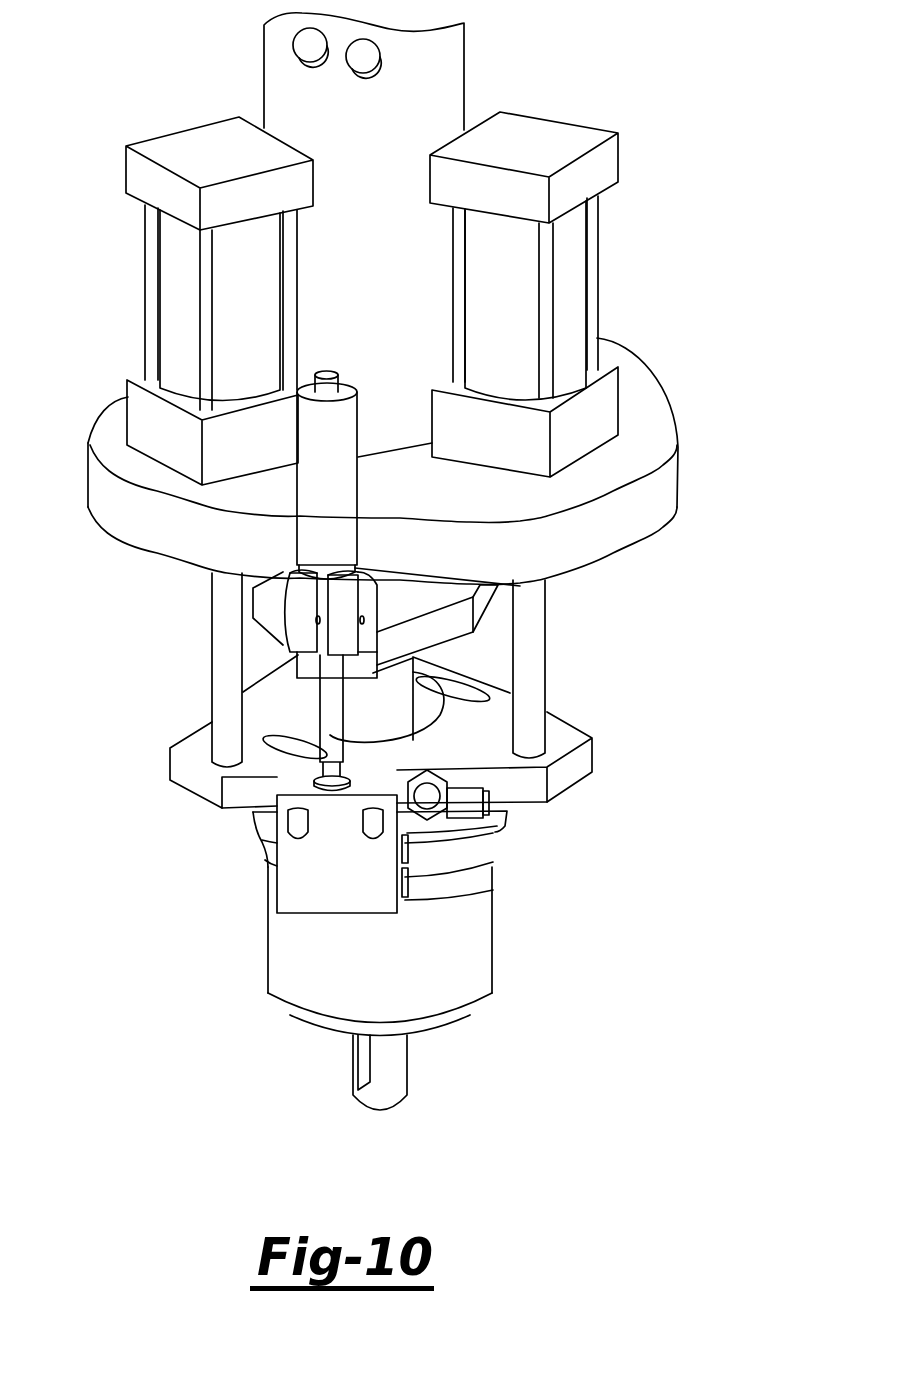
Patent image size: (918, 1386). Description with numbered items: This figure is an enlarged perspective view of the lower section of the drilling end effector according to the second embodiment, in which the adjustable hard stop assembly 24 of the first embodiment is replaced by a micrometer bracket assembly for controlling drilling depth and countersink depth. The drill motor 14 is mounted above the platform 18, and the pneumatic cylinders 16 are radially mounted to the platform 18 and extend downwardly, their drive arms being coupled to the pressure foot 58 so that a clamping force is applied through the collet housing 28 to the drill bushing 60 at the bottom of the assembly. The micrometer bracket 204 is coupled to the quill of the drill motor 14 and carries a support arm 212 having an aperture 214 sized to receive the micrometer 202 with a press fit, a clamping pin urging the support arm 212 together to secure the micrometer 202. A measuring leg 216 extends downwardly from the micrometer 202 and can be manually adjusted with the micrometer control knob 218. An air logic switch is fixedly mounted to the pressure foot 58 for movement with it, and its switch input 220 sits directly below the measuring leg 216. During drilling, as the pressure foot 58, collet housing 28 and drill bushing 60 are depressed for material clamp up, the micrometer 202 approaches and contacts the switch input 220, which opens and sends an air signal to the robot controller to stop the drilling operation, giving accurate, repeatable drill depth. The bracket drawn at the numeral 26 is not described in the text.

The drill motor 14 is at (448, 78).
The pneumatic cylinders 16 is at (148, 277).
The platform 18 is at (657, 535).
The adjustable hard stop assembly 24 is at (150, 632).
The bracket 26 is at (278, 892).
The collet housing 28 is at (493, 923).
The pressure foot 58 is at (592, 755).
The drill bushing 60 is at (407, 1083).
The micrometer 202 is at (297, 438).
The micrometer bracket 204 is at (487, 610).
The support arm 212 is at (350, 630).
The aperture 214 is at (355, 578).
The measuring leg 216 is at (325, 740).
The micrometer control knob 218 is at (360, 400).
The switch input 220 is at (332, 790).